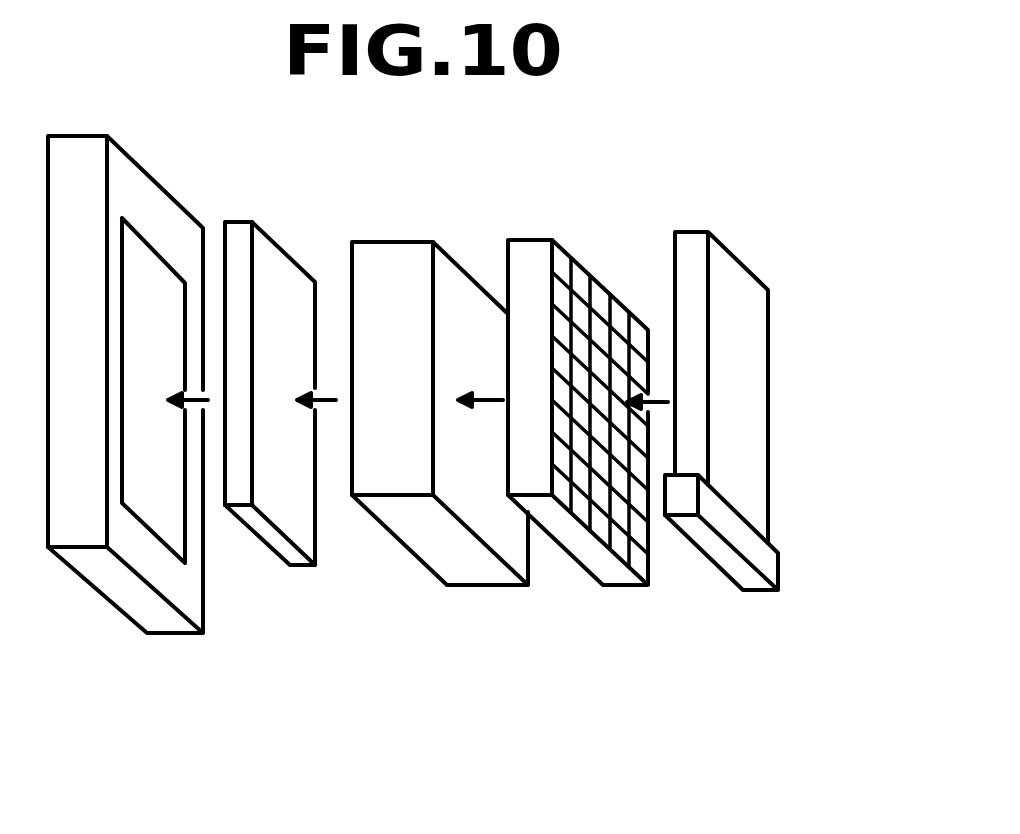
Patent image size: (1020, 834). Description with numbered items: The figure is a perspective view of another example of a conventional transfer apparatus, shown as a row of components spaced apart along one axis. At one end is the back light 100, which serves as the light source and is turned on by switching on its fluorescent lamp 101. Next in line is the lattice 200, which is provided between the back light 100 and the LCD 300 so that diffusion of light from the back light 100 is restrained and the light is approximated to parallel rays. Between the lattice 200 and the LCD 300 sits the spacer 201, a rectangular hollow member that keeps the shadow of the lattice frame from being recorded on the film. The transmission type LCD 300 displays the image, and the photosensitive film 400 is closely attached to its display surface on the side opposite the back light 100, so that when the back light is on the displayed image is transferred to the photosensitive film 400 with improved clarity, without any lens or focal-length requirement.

The back light 100 is at (768, 325).
The fluorescent lamp 101 is at (735, 575).
The lattice 200 is at (600, 573).
The spacer 201 is at (458, 570).
The transmission type liquid crystal display 300 is at (275, 558).
The photosensitive film 400 is at (130, 607).